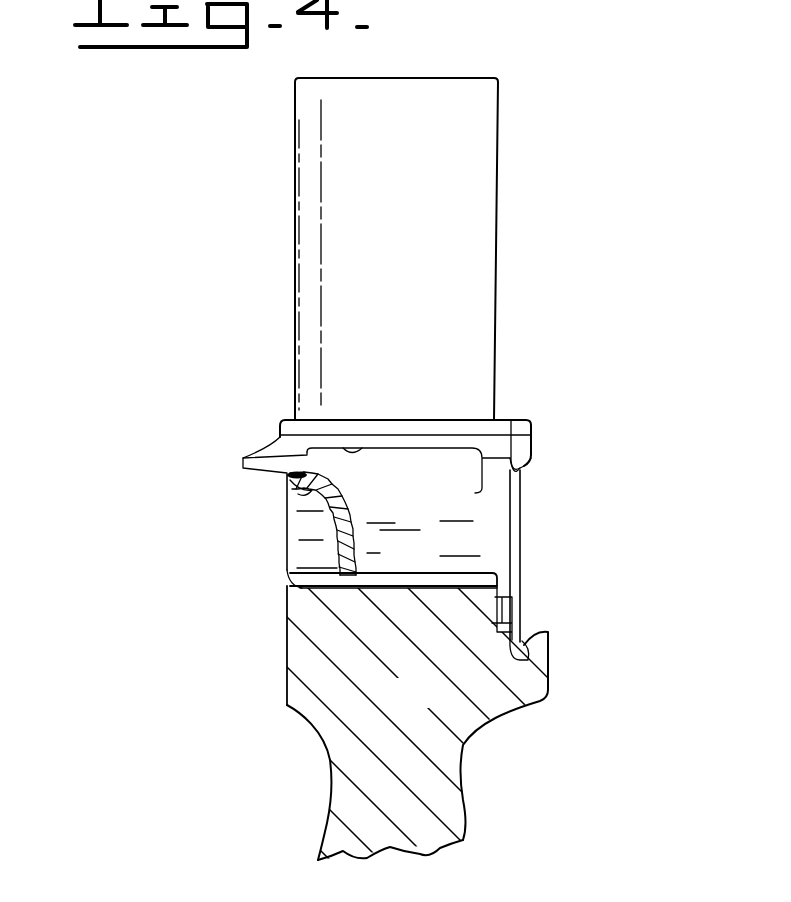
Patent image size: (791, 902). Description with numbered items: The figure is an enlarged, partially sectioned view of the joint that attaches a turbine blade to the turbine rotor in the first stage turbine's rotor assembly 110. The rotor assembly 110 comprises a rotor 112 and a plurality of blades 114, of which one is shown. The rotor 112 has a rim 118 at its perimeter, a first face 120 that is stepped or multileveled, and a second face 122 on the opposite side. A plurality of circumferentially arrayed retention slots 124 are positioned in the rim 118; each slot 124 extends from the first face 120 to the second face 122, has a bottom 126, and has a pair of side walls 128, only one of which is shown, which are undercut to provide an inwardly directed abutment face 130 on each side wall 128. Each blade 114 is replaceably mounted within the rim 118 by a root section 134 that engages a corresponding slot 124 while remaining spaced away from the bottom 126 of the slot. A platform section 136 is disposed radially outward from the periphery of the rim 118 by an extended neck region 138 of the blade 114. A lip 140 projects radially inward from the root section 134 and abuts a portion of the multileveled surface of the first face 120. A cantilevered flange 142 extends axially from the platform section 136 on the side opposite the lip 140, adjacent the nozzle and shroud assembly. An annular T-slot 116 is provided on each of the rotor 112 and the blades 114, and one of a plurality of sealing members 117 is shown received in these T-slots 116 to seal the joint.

The rotor assembly 110 is at (640, 587).
The rotor 112 is at (424, 704).
The blades 114 is at (418, 262).
The annular T-slot 116 is at (515, 421).
The sealing members 117 is at (520, 508).
The rim 118 is at (287, 670).
The first face 120 is at (522, 597).
The second face 122 is at (287, 599).
The retention slots 124 is at (300, 527).
The bottom 126 is at (292, 582).
The side walls 128 is at (295, 500).
The abutment face 130 is at (323, 525).
The root section 134 is at (494, 542).
The platform section 136 is at (283, 422).
The extended neck region 138 is at (358, 448).
The lip 140 is at (522, 612).
The cantilevered flange 142 is at (243, 461).